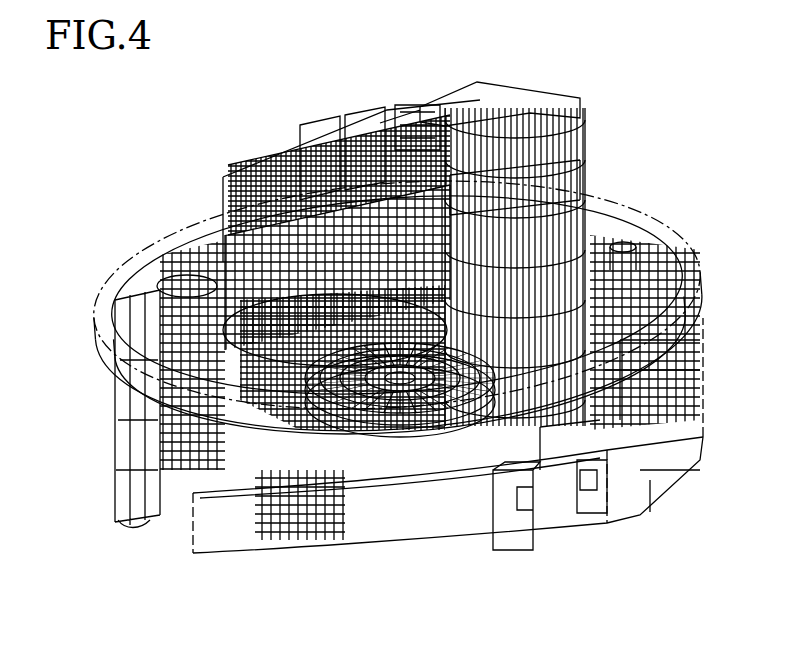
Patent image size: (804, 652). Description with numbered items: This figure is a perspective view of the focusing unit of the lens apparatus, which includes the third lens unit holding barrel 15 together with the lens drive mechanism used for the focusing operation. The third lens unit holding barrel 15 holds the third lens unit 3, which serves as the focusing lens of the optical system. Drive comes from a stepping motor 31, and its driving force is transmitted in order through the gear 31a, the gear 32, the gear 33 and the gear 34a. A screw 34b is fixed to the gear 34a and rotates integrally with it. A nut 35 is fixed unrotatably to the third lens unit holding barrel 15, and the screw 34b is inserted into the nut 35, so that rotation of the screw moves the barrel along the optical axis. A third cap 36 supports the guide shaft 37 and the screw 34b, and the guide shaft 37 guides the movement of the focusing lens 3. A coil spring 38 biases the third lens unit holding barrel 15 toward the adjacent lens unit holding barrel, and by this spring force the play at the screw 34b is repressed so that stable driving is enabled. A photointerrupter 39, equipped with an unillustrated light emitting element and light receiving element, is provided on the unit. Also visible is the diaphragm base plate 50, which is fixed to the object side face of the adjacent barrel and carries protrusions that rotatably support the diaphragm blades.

The third lens unit 3 is at (420, 440).
The third lens unit holding barrel 15 is at (527, 130).
The stepping motor 31 is at (300, 214).
The gear 31a is at (300, 215).
The gear 32 is at (318, 140).
The gear 33 is at (365, 135).
The gear 34a is at (417, 125).
The screw 34b is at (500, 447).
The nut 35 is at (473, 183).
The third cap 36 is at (220, 543).
The guide shaft 37 is at (540, 427).
The coil spring 38 is at (628, 340).
The photointerrupter 39 is at (167, 462).
The diaphragm base plate 50 is at (673, 238).